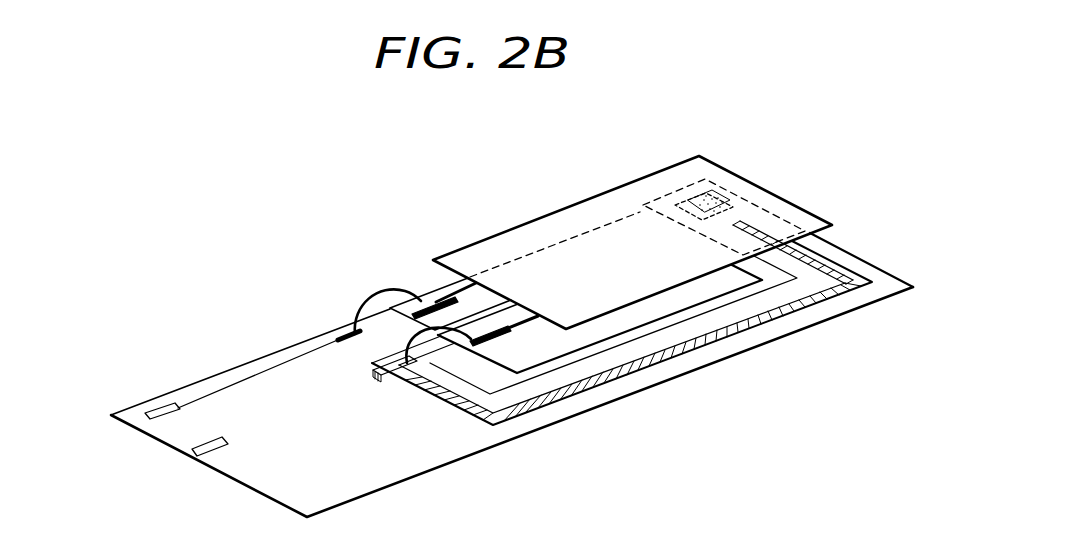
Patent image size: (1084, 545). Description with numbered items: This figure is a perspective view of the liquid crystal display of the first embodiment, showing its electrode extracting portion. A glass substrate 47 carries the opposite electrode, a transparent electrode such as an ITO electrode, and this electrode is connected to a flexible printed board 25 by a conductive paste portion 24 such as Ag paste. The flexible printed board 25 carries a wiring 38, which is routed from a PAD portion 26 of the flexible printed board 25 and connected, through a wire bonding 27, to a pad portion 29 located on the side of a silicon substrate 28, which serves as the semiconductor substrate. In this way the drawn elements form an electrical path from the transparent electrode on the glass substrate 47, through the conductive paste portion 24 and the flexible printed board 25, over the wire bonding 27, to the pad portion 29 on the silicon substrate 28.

The conductive paste portion 24 is at (724, 185).
The flexible printed board 25 is at (493, 449).
The PAD portion 26 is at (380, 370).
The wire bonding 27 is at (440, 338).
The silicon substrate 28 is at (435, 292).
The pad portion 29 is at (506, 339).
The wiring 38 is at (703, 343).
The glass substrate 47 is at (572, 222).